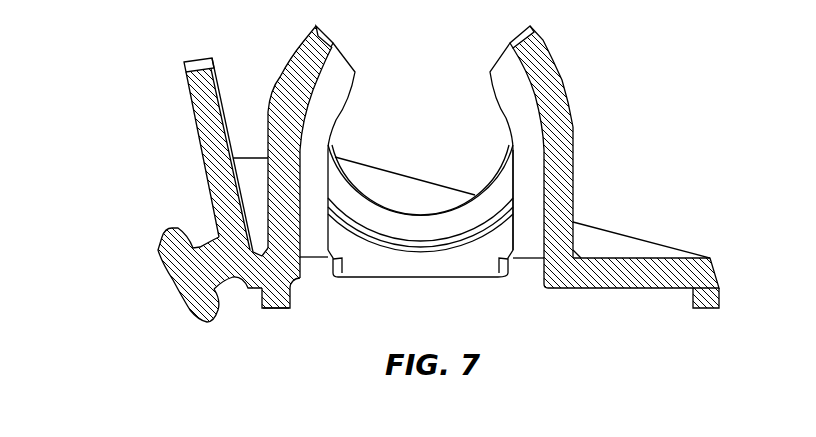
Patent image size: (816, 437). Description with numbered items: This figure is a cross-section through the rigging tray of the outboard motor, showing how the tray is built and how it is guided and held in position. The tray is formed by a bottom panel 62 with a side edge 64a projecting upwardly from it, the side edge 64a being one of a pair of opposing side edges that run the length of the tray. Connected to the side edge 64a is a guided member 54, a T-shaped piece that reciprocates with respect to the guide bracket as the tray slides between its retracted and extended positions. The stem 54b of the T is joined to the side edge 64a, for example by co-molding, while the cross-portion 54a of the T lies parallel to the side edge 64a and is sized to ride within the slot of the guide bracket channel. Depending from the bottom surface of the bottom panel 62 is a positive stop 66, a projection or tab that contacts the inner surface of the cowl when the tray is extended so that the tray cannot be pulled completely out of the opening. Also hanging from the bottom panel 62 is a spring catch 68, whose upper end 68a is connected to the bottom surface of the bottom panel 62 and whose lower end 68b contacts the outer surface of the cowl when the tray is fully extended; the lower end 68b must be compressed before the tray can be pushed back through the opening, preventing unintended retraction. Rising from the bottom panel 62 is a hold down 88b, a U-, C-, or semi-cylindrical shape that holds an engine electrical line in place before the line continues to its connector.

The guided member 54 is at (138, 251).
The cross-portion 54a is at (172, 283).
The stem 54b is at (233, 280).
The bottom panel 62 is at (612, 250).
The side edge 64a is at (192, 111).
The positive stop 66 is at (709, 310).
The spring catch 68 is at (310, 337).
The upper end 68a is at (297, 283).
The lower end 68b is at (277, 310).
The hold down 88b is at (559, 53).